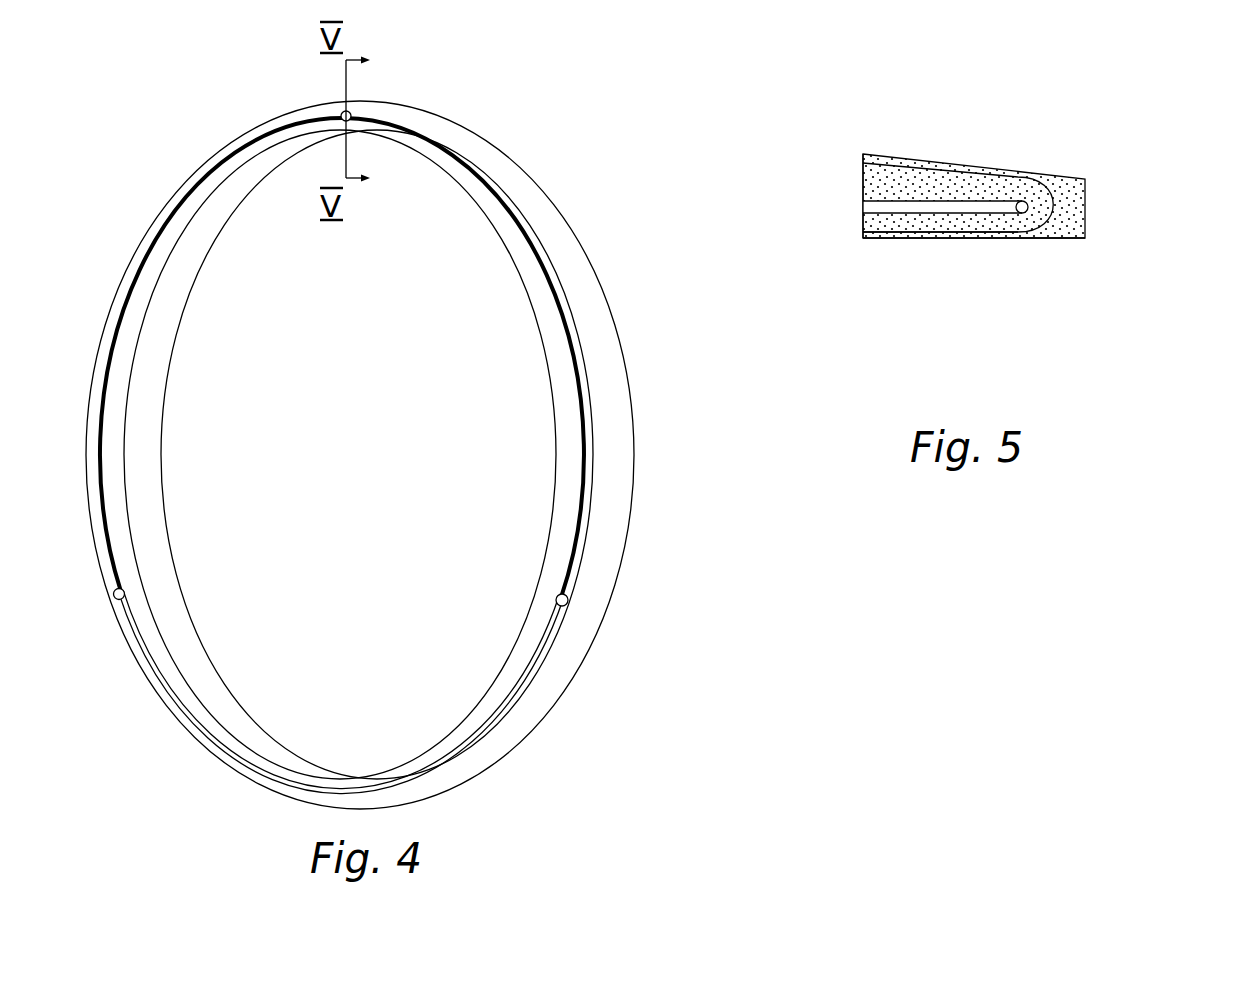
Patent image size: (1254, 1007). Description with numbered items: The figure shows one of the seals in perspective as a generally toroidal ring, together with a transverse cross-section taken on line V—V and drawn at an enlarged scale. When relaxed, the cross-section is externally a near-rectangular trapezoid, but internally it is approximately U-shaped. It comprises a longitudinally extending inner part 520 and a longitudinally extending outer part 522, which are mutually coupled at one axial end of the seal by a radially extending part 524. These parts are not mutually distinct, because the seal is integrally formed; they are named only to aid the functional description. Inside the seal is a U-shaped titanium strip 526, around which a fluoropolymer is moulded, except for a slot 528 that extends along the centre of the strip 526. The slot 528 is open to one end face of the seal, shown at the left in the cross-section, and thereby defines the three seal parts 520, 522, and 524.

The inner part 520 is at (917, 218).
The outer part 522 is at (935, 185).
The radially extending part 524 is at (1073, 206).
The U-shaped titanium strip 526 is at (958, 233).
The slot 528 is at (863, 198).